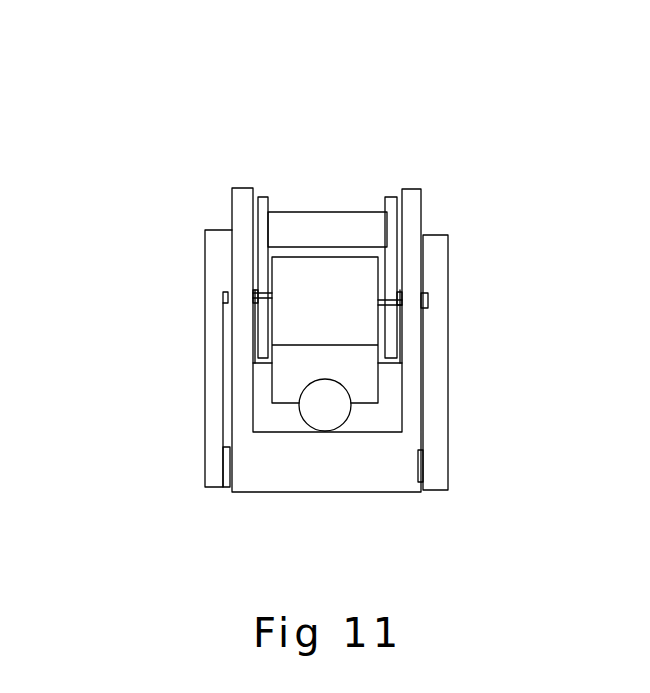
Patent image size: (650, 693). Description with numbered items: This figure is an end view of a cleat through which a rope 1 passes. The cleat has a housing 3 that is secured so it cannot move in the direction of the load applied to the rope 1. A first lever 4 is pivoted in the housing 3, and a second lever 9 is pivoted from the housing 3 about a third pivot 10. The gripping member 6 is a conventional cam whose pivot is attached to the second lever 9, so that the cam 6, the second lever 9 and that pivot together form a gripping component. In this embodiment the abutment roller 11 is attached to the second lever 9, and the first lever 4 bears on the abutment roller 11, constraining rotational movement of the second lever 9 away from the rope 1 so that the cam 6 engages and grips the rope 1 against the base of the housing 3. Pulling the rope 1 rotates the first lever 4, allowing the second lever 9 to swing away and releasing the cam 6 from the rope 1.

The rope 1 is at (333, 400).
The housing 3 is at (235, 413).
The first lever 4 is at (432, 268).
The gripping member 6 is at (340, 318).
The second lever 9 is at (398, 230).
The third pivot 10 is at (305, 229).
The abutment roller 11 is at (377, 330).